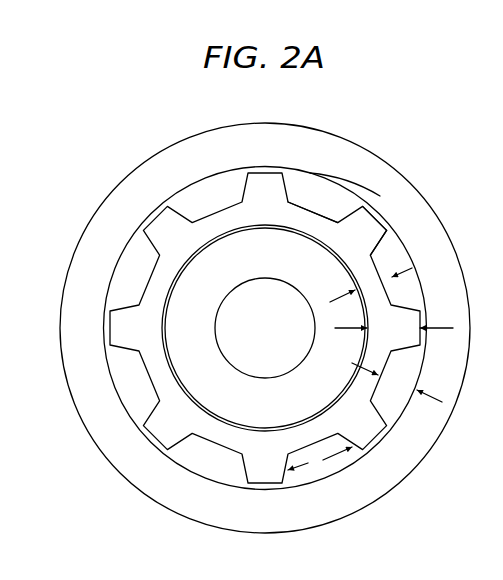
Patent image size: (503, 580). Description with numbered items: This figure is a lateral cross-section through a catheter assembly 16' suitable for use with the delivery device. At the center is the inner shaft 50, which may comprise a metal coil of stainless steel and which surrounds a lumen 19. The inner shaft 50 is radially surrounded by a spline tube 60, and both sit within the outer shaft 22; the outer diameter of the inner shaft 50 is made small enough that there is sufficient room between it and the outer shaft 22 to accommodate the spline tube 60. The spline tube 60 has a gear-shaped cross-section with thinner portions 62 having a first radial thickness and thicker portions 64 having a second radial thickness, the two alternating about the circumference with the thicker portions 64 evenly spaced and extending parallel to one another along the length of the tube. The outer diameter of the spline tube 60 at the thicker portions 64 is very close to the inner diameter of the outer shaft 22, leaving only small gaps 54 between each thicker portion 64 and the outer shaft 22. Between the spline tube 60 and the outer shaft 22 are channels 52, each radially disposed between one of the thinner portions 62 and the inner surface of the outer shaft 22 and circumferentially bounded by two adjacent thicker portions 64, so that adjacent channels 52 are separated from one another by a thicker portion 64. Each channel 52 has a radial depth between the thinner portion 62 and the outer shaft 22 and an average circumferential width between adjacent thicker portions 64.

The catheter assembly 16' is at (249, 310).
The outer shaft 22 is at (287, 124).
The spline tube 60 is at (258, 171).
The inner shaft 50 is at (225, 237).
The lumen 19 is at (235, 317).
The thinner portions 62 is at (303, 203).
The channels 52 is at (340, 200).
The thicker portions 64 is at (373, 211).
The gaps 54 is at (388, 222).